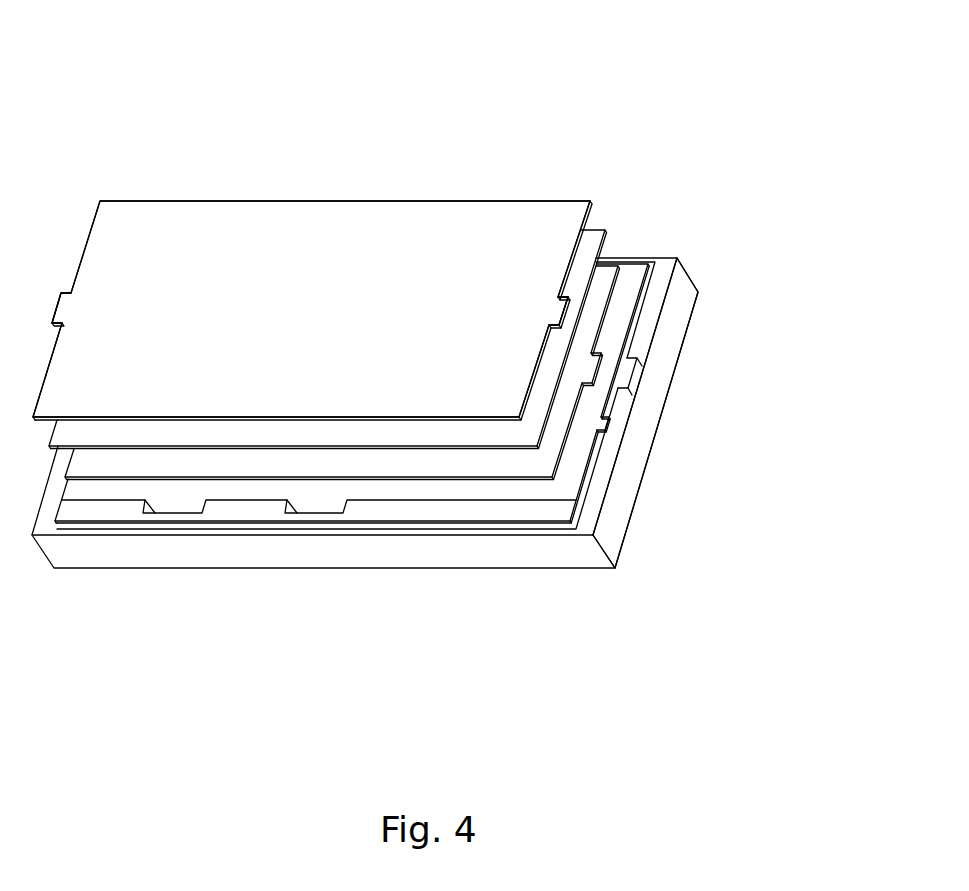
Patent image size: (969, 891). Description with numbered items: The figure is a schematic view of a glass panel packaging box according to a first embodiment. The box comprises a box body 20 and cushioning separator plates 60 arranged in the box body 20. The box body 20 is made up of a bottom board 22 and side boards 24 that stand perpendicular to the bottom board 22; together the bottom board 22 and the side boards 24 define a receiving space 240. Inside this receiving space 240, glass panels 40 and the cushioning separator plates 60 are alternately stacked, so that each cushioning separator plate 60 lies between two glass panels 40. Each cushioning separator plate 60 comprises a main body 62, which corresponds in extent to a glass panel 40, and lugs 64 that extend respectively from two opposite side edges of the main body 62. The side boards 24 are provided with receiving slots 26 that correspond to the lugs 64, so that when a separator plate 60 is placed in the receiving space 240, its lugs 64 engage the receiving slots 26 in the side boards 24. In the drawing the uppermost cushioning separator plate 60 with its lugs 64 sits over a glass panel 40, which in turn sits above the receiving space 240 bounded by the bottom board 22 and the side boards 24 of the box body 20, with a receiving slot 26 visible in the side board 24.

The box body 20 is at (218, 552).
The bottom board 22 is at (625, 550).
The side boards 24 is at (653, 302).
The receiving space 240 is at (440, 490).
The receiving slots 26 is at (612, 388).
The glass panel 40 is at (593, 243).
The cushioning separator plate 60 is at (208, 200).
The main body 62 is at (281, 236).
The lugs 64 is at (557, 297).